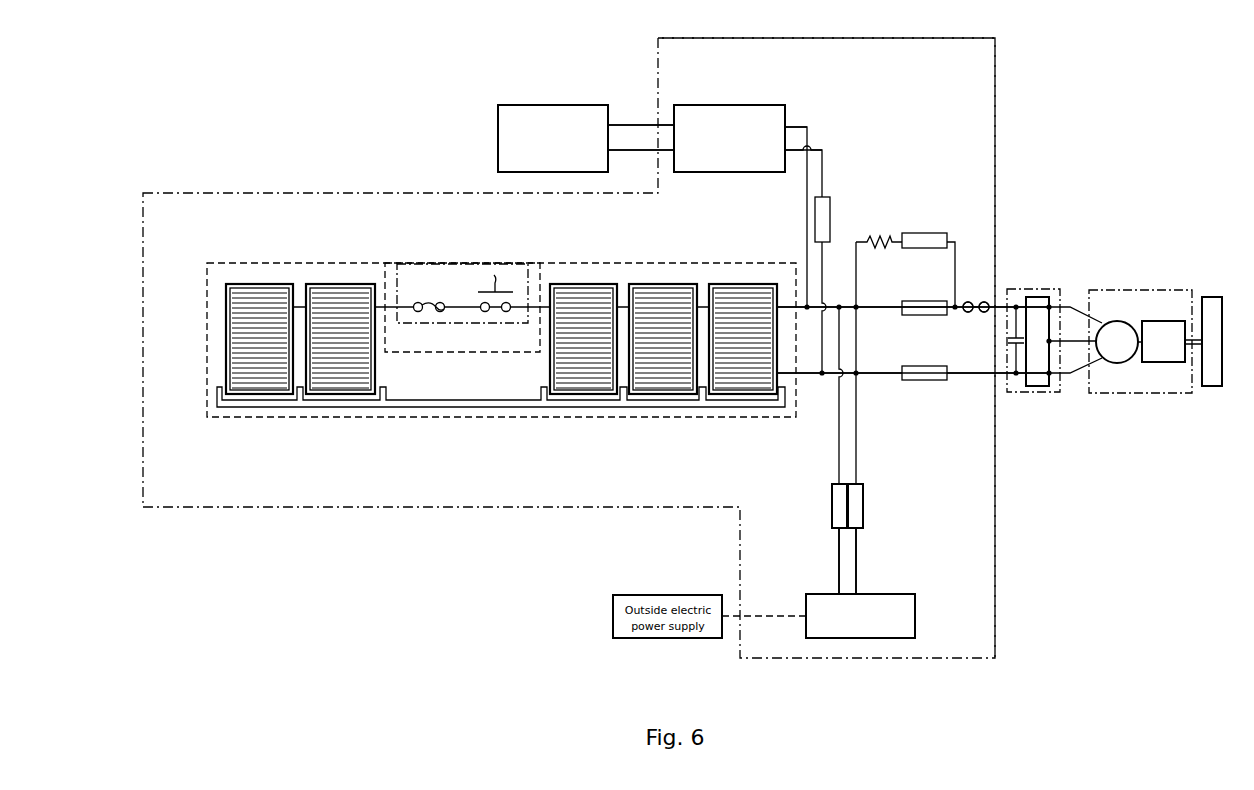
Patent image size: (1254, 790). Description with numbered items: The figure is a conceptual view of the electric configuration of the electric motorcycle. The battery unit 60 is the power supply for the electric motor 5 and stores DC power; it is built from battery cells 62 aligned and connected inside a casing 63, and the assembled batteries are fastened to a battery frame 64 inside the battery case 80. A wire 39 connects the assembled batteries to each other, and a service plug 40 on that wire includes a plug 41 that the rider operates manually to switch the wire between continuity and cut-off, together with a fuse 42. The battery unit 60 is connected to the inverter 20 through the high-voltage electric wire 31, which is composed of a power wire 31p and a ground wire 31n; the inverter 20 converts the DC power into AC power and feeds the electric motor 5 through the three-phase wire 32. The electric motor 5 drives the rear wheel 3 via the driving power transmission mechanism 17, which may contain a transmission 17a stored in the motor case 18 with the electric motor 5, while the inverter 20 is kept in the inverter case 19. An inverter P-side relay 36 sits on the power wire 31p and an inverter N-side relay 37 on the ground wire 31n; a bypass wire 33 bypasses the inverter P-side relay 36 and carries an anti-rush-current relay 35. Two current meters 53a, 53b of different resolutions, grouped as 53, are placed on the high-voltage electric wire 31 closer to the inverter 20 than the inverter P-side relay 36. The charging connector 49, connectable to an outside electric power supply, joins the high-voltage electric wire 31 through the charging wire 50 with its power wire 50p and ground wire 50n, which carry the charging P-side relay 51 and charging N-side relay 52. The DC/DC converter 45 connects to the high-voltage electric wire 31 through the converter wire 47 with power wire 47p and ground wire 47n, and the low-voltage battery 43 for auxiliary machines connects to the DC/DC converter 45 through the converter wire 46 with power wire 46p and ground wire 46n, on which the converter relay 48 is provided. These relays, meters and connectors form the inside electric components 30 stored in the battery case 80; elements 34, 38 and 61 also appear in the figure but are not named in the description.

The rear wheel 3 is at (1212, 297).
The electric motor 5 is at (1132, 322).
The driving power transmission mechanism 17 is at (1195, 348).
The transmission 17a is at (1172, 321).
The motor case 18 is at (1127, 395).
The inverter case 19 is at (1027, 395).
The inverter 20 is at (1038, 297).
The inside electric components 30 is at (971, 122).
The high-voltage electric wire 31 is at (961, 435).
The ground wire 31n is at (872, 378).
The power wire 31p is at (870, 310).
The three-phase wire 32 is at (1072, 305).
The bypass wire 33 is at (960, 300).
The precharge resistor 34 is at (878, 236).
The anti-rush-current relay 35 is at (915, 233).
The inverter P-side relay 36 is at (915, 301).
The inverter N-side relay 37 is at (930, 366).
The capacitor 38 is at (1012, 330).
The wire 39 is at (537, 304).
The service plug 40 is at (408, 263).
The plug 41 is at (499, 280).
The fuse 42 is at (425, 303).
The low-voltage battery 43 is at (540, 105).
The DC/DC converter 45 is at (745, 105).
The second converter wire 46 is at (637, 50).
The ground wire 46n is at (635, 145).
The power wire 46p is at (643, 125).
The first converter wire 47 is at (893, 112).
The ground wire 47n is at (822, 158).
The power wire 47p is at (807, 137).
The converter relay 48 is at (830, 210).
The charging connector 49 is at (915, 615).
The charging wire 50 is at (923, 532).
The ground wire 50n is at (856, 540).
The power wire 50p is at (839, 545).
The charging P-side relay 51 is at (832, 512).
The charging N-side relay 52 is at (863, 495).
The relay 53 is at (1061, 140).
The current meter 53a is at (972, 301).
The current meter 53b is at (987, 300).
The battery unit 60 is at (220, 263).
The battery cell 61 is at (272, 284).
The battery cell 62 is at (229, 305).
The casing 63 is at (245, 394).
The battery frame 64 is at (455, 407).
The battery case 80 is at (995, 598).